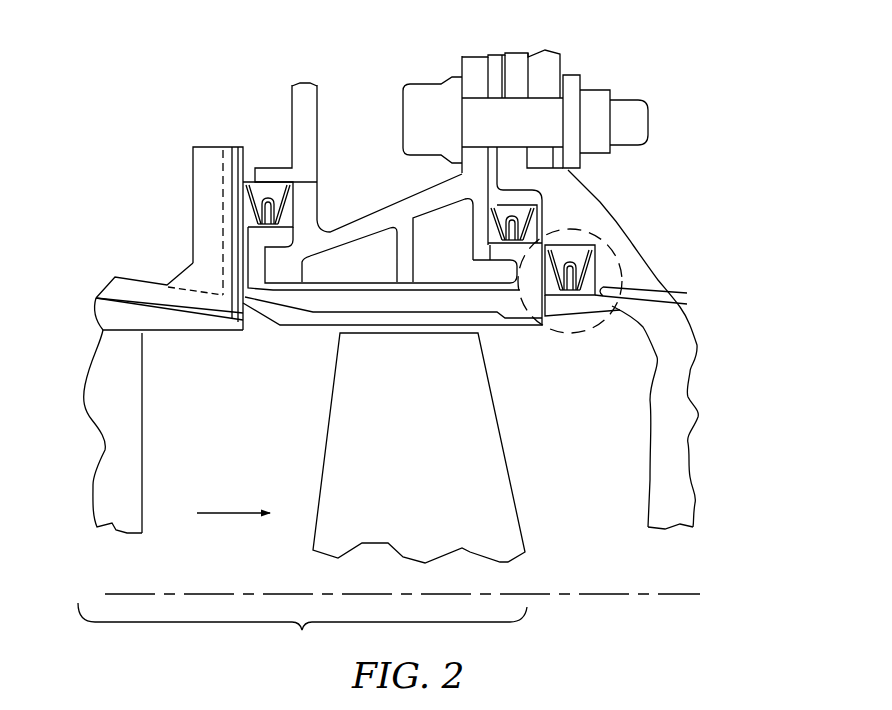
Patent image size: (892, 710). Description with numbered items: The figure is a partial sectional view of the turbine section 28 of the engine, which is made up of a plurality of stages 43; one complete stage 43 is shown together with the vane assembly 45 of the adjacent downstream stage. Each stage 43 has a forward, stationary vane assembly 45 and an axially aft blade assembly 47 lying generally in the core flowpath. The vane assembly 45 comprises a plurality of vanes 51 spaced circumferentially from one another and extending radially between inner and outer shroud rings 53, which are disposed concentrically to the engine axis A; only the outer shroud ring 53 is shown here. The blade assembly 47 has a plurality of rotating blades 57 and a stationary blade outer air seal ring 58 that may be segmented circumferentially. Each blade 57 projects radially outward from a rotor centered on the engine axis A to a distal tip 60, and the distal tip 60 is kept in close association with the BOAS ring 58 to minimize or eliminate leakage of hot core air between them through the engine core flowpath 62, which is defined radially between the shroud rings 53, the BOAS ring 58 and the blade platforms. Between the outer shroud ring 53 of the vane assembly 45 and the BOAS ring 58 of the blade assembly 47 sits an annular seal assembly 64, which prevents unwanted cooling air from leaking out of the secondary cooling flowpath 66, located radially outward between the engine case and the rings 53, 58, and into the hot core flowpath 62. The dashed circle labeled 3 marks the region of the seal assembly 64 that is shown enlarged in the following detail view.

The turbine section 28 is at (726, 198).
The vane assembly 45 is at (120, 170).
The blade assembly 47 is at (346, 78).
The vane 51 is at (132, 480).
The shroud ring 53 is at (177, 267).
The rotating blade 57 is at (498, 478).
The blade outer air seal (BOAS) ring 58 is at (507, 320).
The distal tip 60 is at (367, 332).
The engine core flowpath 62 is at (276, 457).
The annular seal assembly 64 is at (272, 180).
The secondary cooling flowpath 66 is at (151, 120).
The detail region of FIG. 3 is at (573, 333).
The stage 43 is at (302, 634).
The engine axis A is at (608, 592).